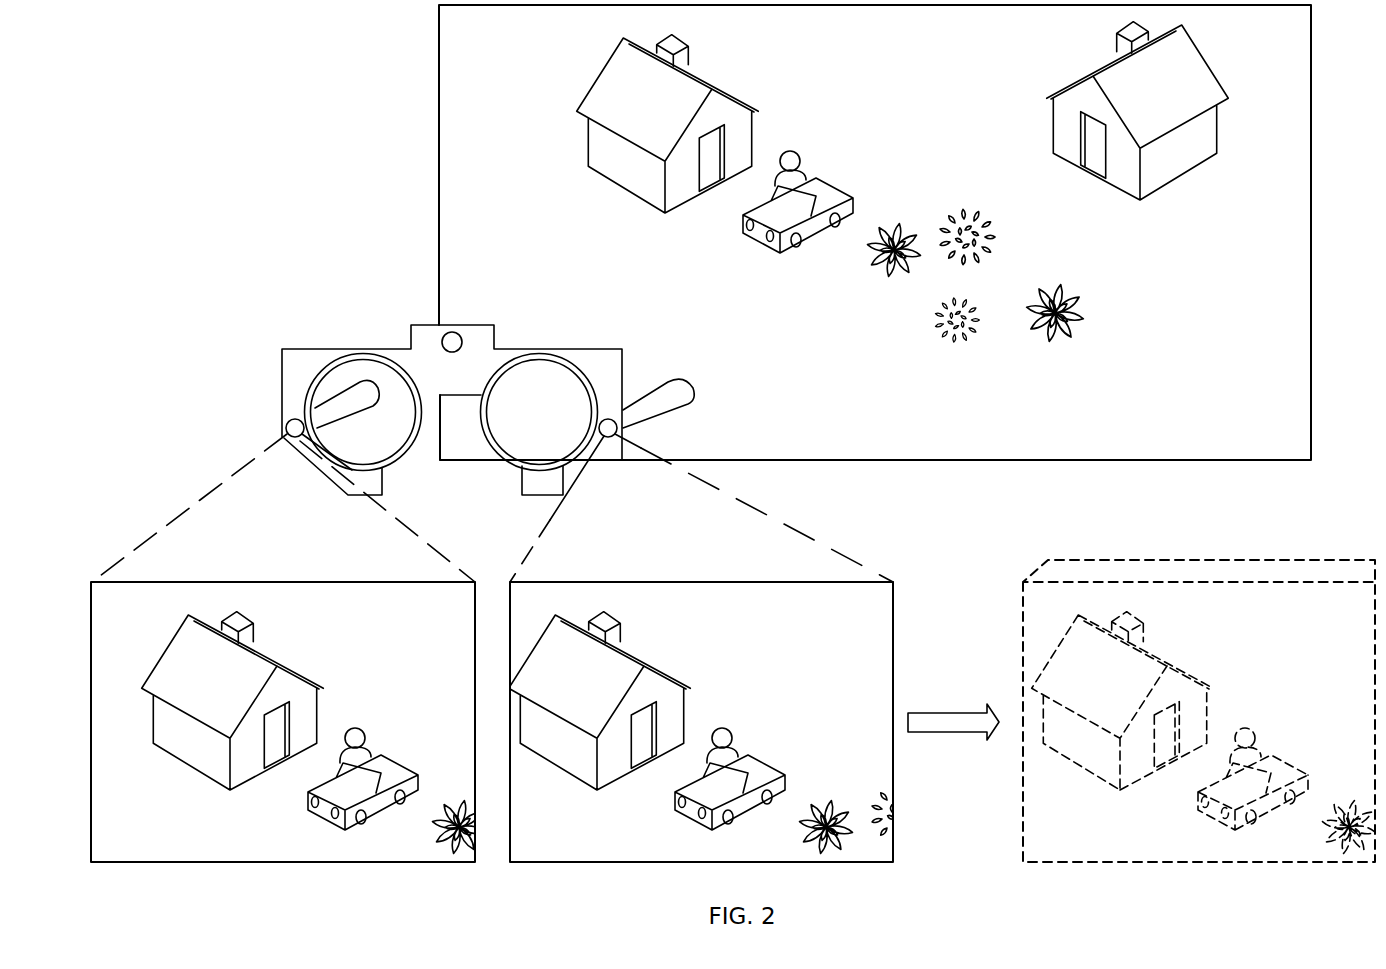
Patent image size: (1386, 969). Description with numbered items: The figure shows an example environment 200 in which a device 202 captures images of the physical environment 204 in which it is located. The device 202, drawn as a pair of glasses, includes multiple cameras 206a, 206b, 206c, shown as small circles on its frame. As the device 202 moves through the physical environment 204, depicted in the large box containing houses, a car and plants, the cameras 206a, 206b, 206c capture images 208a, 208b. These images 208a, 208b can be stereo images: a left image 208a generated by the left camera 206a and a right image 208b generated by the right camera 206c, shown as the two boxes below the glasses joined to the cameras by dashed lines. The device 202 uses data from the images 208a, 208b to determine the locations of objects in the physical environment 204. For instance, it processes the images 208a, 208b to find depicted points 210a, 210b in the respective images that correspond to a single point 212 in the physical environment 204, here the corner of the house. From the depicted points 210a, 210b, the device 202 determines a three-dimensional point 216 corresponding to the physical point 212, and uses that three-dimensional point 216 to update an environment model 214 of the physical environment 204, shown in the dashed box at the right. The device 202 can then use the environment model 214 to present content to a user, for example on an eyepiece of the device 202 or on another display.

The environment 200 is at (200, 108).
The device 202 is at (282, 349).
The physical environment 204 is at (1292, 452).
The left camera 206a is at (286, 430).
The camera 206b is at (447, 336).
The right camera 206c is at (599, 428).
The left image 208a is at (458, 609).
The right image 208b is at (878, 609).
The depicted point 210a is at (230, 797).
The depicted point 210b is at (597, 797).
The point 212 is at (663, 226).
The environment model 214 is at (1365, 607).
The 3D point 216 is at (1120, 797).